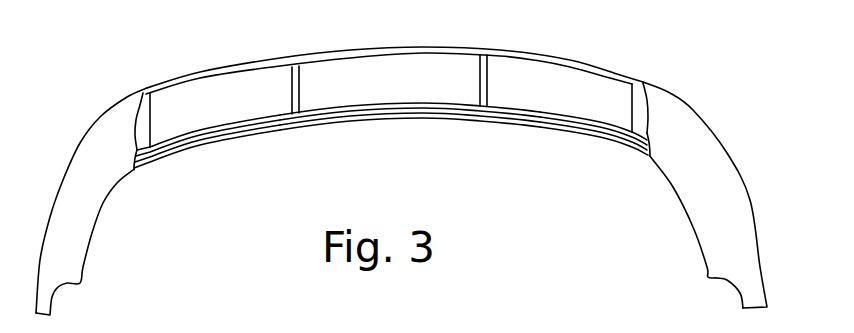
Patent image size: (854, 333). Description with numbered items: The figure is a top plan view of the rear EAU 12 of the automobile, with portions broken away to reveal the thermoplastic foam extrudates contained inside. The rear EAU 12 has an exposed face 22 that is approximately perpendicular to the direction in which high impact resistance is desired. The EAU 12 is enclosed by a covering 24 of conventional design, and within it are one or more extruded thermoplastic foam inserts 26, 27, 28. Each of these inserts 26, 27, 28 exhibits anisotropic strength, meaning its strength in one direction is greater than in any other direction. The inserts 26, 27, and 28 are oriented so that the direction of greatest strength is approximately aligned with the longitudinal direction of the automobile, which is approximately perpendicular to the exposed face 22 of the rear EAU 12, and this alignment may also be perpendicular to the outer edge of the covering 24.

The rear EAU 12 is at (727, 113).
The exposed face 22 is at (397, 94).
The covering 24 is at (600, 63).
The extruded thermoplastic foam insert 26 is at (222, 118).
The extruded thermoplastic foam insert 27 is at (408, 88).
The extruded thermoplastic foam insert 28 is at (583, 100).